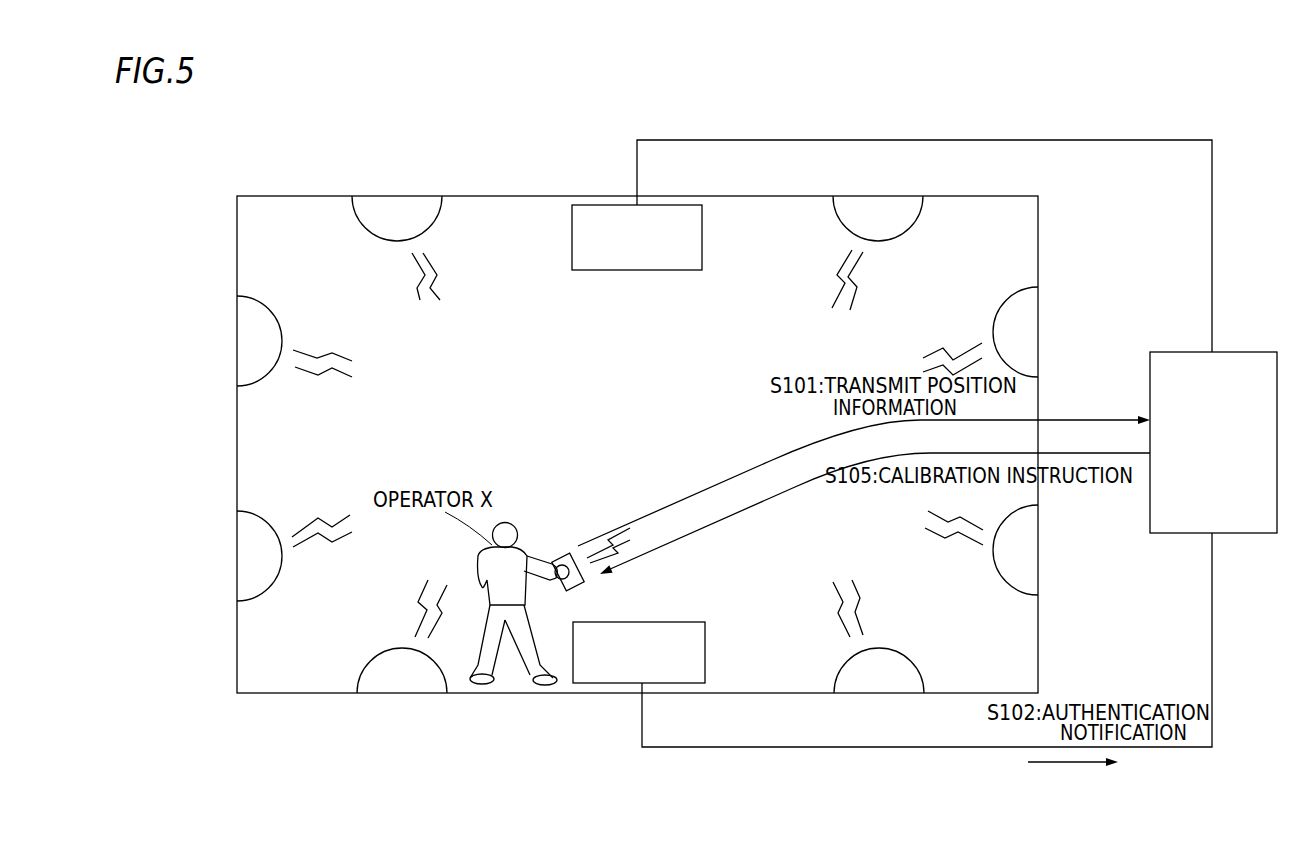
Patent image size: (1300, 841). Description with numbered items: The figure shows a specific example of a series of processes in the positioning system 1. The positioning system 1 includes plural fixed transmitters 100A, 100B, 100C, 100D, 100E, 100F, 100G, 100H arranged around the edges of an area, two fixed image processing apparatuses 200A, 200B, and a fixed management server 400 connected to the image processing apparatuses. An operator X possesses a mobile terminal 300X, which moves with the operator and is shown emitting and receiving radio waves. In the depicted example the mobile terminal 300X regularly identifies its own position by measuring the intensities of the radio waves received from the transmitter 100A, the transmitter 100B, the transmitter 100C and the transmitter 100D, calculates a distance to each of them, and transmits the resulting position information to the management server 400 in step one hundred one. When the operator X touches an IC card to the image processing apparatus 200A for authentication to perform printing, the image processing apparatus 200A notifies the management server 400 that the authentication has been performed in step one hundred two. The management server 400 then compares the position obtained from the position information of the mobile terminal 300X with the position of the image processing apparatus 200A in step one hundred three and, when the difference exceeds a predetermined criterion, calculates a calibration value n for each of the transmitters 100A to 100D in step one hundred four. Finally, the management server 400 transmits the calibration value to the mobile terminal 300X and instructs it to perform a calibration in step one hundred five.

The positioning system 1 is at (248, 158).
The transmitter 100A is at (248, 556).
The transmitter 100B is at (400, 683).
The transmitter 100C is at (880, 682).
The transmitter 100D is at (1030, 556).
The transmitter 100E is at (1035, 322).
The transmitter 100F is at (880, 205).
The transmitter 100G is at (397, 205).
The transmitter 100H is at (248, 341).
The image processing apparatus 200A is at (600, 672).
The image processing apparatus 200B is at (603, 218).
The mobile terminal 300X is at (562, 556).
The management server 400 is at (1245, 352).